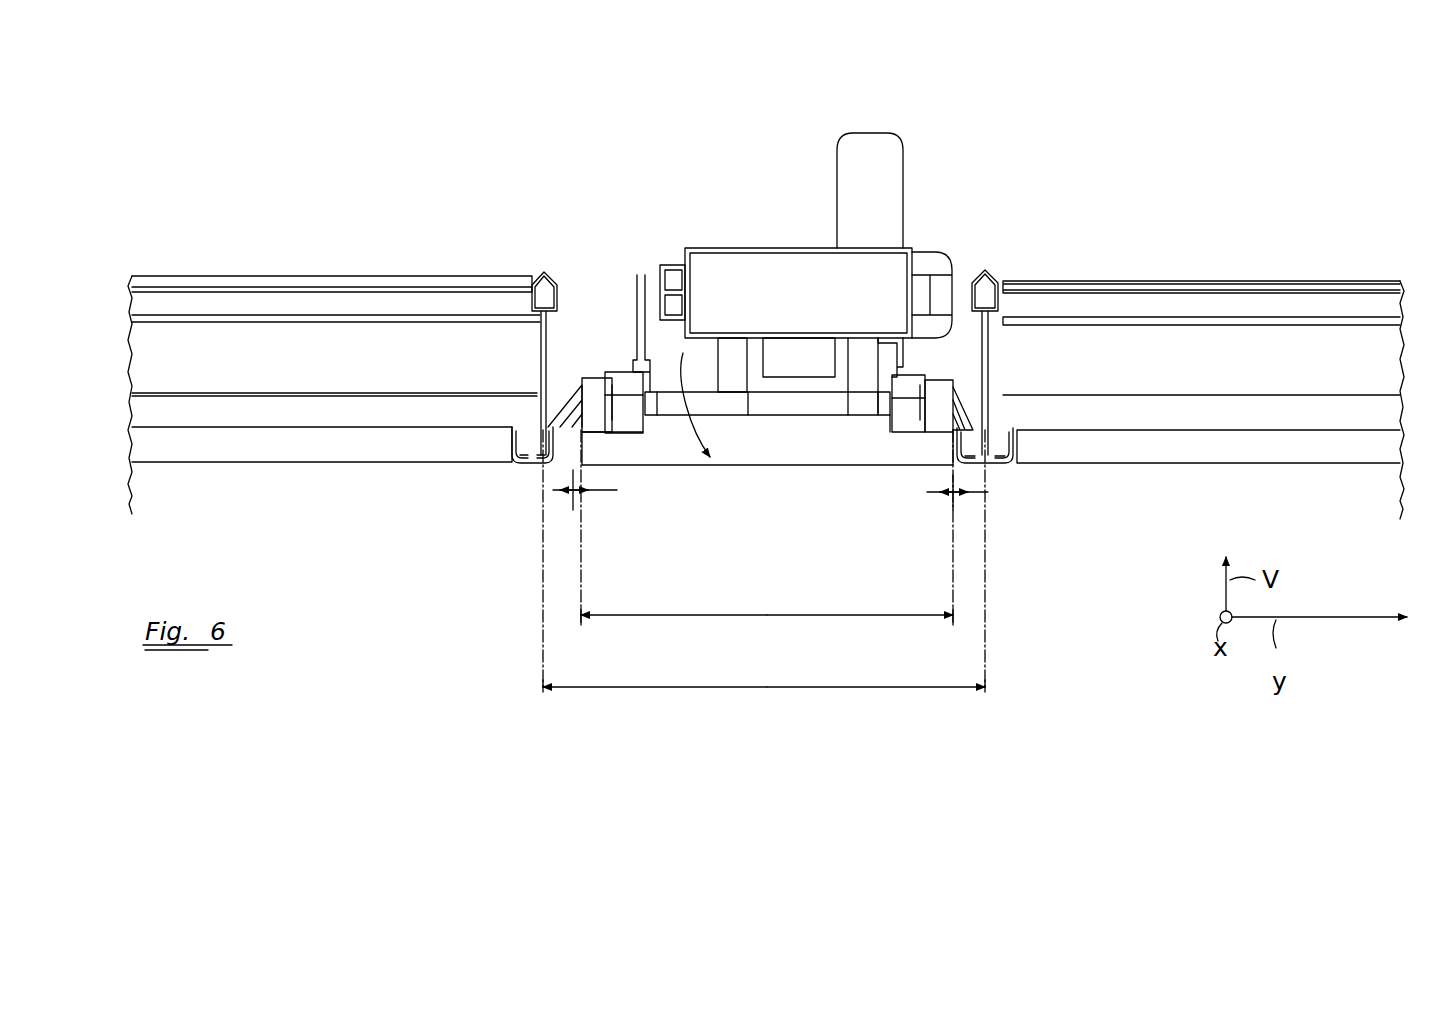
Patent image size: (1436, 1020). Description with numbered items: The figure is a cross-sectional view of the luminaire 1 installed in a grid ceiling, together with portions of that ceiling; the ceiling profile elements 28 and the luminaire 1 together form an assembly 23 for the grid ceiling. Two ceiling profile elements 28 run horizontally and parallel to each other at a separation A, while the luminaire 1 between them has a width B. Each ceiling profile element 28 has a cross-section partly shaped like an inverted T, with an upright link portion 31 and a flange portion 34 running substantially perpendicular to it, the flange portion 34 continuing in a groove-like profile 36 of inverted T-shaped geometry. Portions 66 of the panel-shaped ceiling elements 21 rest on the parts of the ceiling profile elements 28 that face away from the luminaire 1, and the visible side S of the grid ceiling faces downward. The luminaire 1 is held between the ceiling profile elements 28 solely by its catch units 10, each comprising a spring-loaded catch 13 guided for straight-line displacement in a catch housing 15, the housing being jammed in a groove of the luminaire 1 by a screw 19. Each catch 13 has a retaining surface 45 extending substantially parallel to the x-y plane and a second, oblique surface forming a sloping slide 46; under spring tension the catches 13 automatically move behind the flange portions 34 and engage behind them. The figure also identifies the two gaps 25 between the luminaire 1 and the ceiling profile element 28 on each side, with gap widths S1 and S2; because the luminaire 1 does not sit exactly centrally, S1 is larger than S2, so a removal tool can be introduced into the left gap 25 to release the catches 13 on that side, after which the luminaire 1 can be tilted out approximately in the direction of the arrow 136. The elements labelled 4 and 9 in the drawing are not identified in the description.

The luminaire 1 is at (773, 487).
The drive unit 4 is at (793, 248).
The carrier plate 9 is at (836, 465).
The catch unit 10 is at (623, 442).
The catch 13 is at (562, 390).
The catch housing 15 is at (620, 383).
The screw 19 is at (912, 445).
The ceiling element 21 is at (297, 452).
The assembly 23 is at (955, 167).
The gap 25 is at (560, 470).
The ceiling profile element 28 is at (573, 380).
The link portion 31 is at (540, 382).
The flange portion 34 is at (517, 413).
The groove-like profile 36 is at (547, 453).
The retaining surface 45 is at (578, 438).
The sloping slide 46 is at (595, 382).
The portion of ceiling element 66 is at (1010, 428).
The arrow 136 is at (683, 387).
The visible side S is at (383, 500).
The gap width S1 is at (605, 492).
The gap width S2 is at (980, 497).
The separation A is at (822, 688).
The width B is at (845, 617).